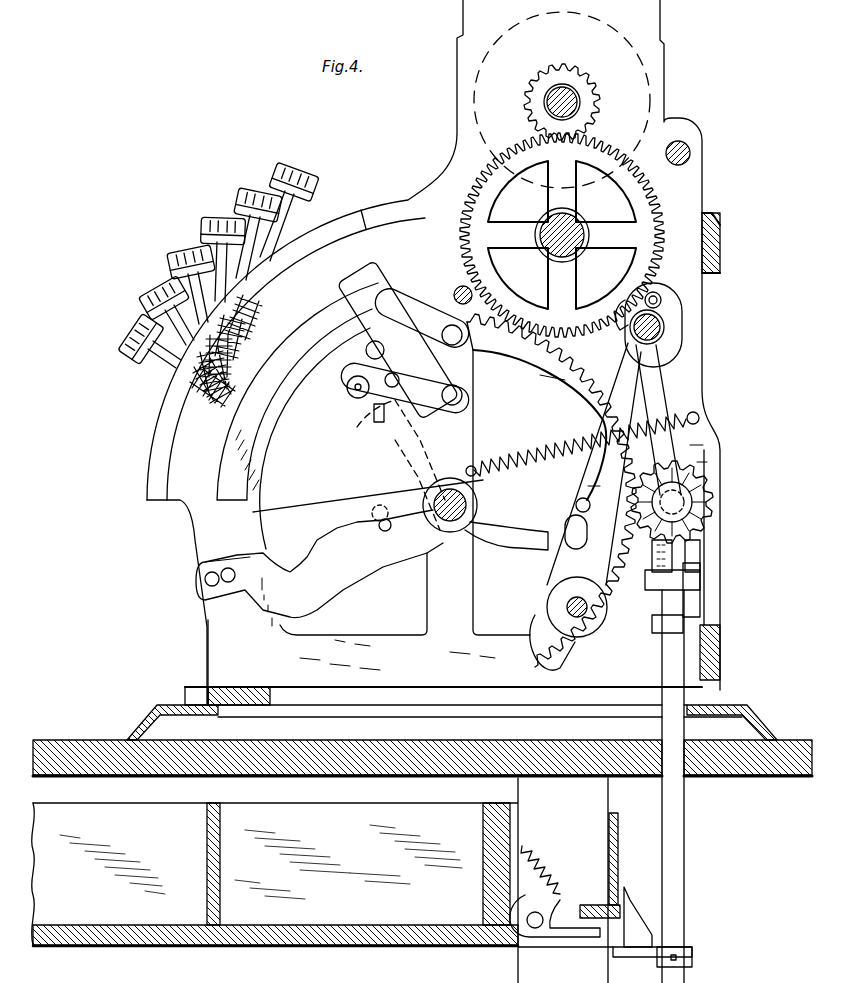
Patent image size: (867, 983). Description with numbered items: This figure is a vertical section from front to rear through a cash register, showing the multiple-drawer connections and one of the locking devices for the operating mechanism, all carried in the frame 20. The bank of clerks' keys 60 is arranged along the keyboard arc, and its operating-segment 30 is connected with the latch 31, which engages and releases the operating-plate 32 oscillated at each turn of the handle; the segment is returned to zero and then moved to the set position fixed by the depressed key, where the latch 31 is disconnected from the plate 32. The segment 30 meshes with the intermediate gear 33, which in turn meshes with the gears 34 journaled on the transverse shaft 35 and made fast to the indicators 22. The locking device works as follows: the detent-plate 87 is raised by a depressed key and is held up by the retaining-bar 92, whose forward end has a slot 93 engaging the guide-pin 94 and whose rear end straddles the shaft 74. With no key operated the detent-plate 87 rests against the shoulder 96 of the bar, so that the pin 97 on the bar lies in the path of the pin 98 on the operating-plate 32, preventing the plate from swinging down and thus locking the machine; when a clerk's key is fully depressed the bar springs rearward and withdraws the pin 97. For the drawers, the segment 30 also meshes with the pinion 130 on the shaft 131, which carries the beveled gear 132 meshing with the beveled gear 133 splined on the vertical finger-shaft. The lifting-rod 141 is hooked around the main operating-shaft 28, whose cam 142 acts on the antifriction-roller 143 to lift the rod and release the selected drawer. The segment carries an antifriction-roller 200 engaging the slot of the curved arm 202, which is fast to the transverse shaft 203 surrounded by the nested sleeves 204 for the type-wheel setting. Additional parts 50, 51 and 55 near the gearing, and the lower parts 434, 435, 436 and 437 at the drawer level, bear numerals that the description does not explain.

The frame 20 is at (433, 352).
The indicators 22 is at (628, 40).
The main operating-shaft 28 is at (650, 340).
The operating-segment 30 is at (551, 490).
The latch 31 is at (392, 300).
The operating-plate 32 is at (401, 465).
The intermediate gear 33 is at (562, 235).
The gears 34 is at (565, 66).
The transverse shaft 35 is at (580, 104).
The stud 50 is at (548, 250).
The gear shaft 51 is at (585, 236).
The spring 55 is at (528, 448).
The clerks' keys 60 is at (218, 222).
The shaft 74 is at (478, 503).
The detent-plate 87 is at (368, 496).
The retaining-bar 92 is at (372, 564).
The slot 93 is at (205, 582).
The guide-pin 94 is at (228, 583).
The shoulder 96 is at (240, 556).
The pin 97 is at (382, 530).
The pin 98 is at (375, 508).
The pinion 130 is at (670, 466).
The shaft 131 is at (700, 470).
The beveled gear 132 is at (708, 490).
The beveled gear 133 is at (705, 538).
The lifting-rod 141 is at (625, 367).
The cam 142 is at (622, 305).
The antifriction-roller 143 is at (656, 295).
The antifriction-rollers 200 is at (576, 506).
The curved arms 202 is at (585, 506).
The transverse shaft 203 is at (566, 607).
The nested sleeves 204 is at (588, 488).
The rod 434 is at (672, 838).
The collar 435 is at (692, 952).
The bracket 436 is at (628, 898).
The lever 437 is at (590, 940).